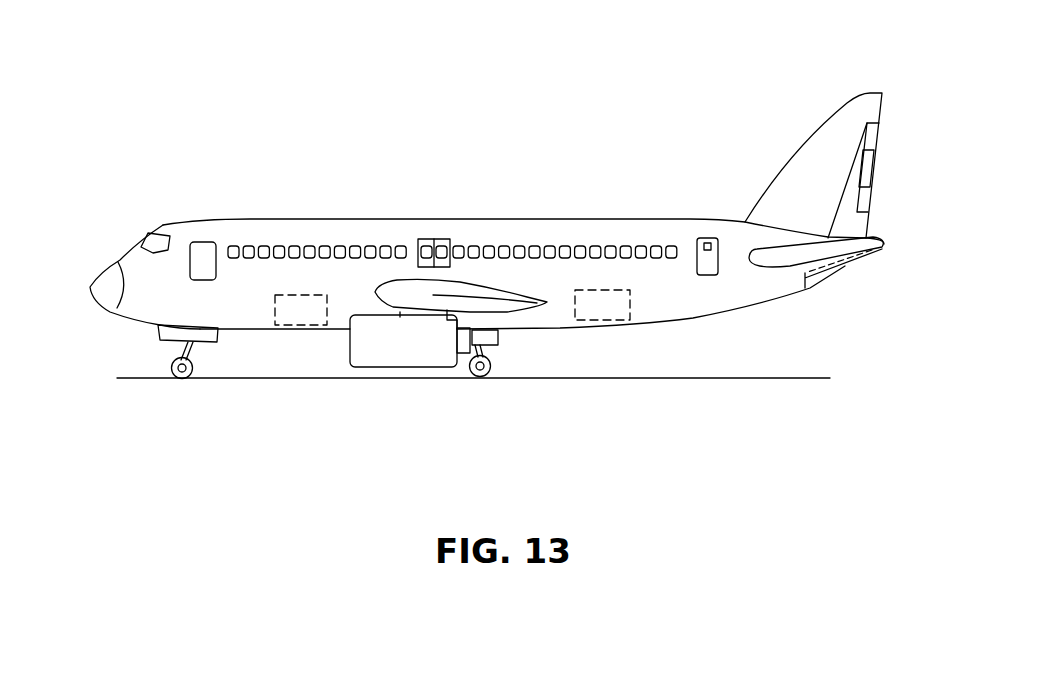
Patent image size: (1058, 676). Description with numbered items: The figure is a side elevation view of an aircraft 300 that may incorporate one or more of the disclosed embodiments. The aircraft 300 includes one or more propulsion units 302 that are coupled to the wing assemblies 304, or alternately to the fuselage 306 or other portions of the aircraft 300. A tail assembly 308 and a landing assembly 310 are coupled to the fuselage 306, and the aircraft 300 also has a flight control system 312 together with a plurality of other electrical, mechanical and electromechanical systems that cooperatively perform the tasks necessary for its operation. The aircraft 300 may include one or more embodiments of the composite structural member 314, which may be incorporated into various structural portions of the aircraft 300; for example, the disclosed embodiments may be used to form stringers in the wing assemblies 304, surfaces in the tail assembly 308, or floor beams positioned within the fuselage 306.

The aircraft 300 is at (548, 122).
The propulsion unit 302 is at (400, 347).
The wing assembly 304 is at (517, 315).
The fuselage 306 is at (466, 218).
The tail assembly 308 is at (877, 214).
The landing assembly 310 is at (193, 373).
The flight control system 312 is at (132, 268).
The composite structural member 314 is at (677, 303).